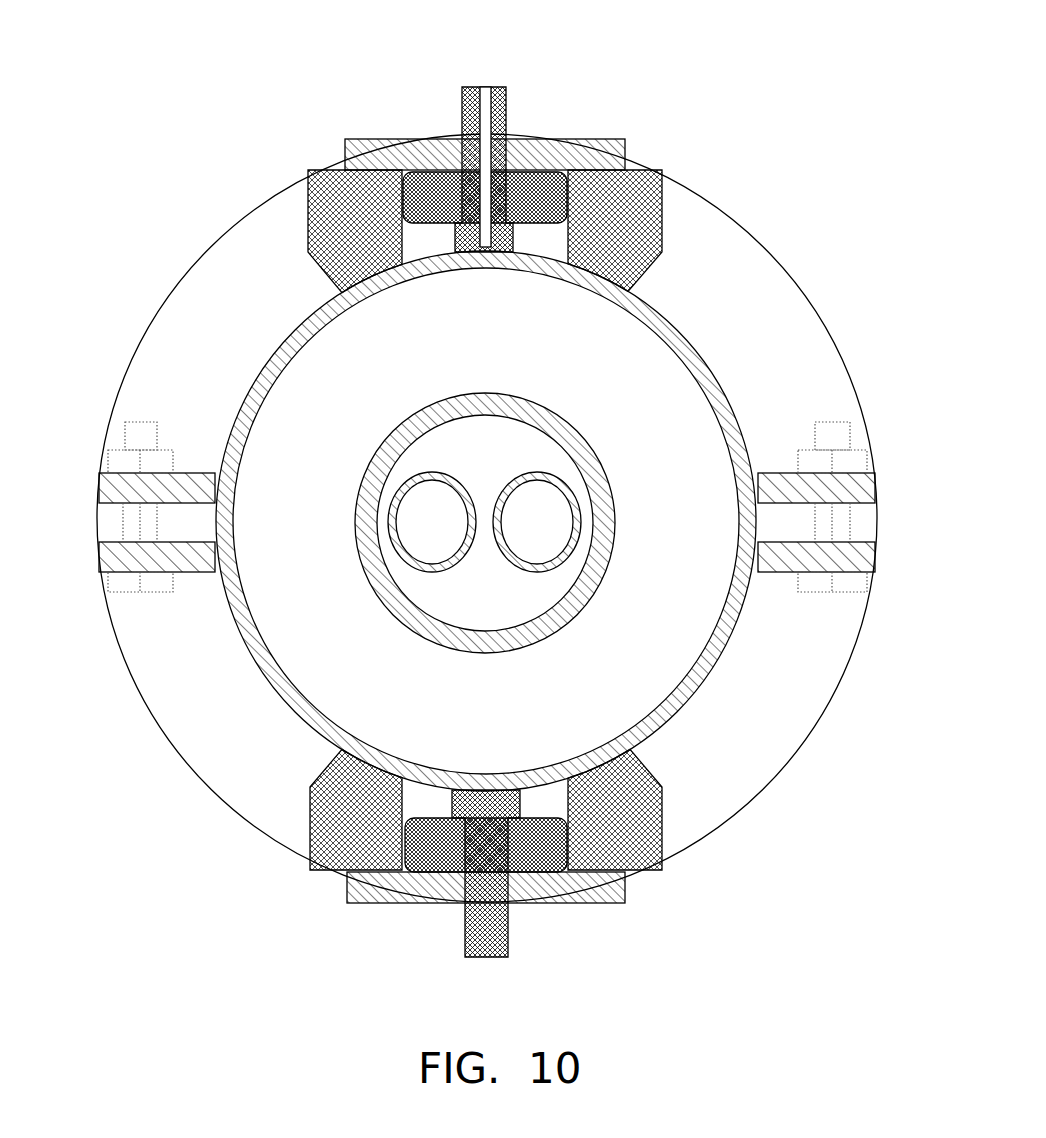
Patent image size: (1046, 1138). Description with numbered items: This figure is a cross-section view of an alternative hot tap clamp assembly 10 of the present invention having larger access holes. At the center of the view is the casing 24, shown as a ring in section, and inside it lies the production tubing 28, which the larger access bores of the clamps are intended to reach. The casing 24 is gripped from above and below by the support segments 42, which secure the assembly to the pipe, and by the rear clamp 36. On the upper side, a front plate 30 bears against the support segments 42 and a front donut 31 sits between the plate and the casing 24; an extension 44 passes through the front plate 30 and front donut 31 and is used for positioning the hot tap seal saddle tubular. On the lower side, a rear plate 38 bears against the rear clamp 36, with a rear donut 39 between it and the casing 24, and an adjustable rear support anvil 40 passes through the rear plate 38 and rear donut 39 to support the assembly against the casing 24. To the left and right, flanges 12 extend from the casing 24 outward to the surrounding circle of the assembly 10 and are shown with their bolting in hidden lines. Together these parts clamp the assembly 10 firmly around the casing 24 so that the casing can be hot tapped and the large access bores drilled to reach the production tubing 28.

The hot tap assembly 10 is at (691, 149).
The flange 12 is at (120, 463).
The casing 24 is at (680, 332).
The production tubing 28 is at (420, 472).
The front plate 30 is at (627, 147).
The front donut 31 is at (526, 205).
The rear clamp 36 is at (630, 807).
The rear plate 38 is at (628, 890).
The rear donut 39 is at (523, 840).
The adjustable rear support anvil 40 is at (463, 923).
The support segments 42 is at (647, 257).
The extension 44 is at (505, 88).